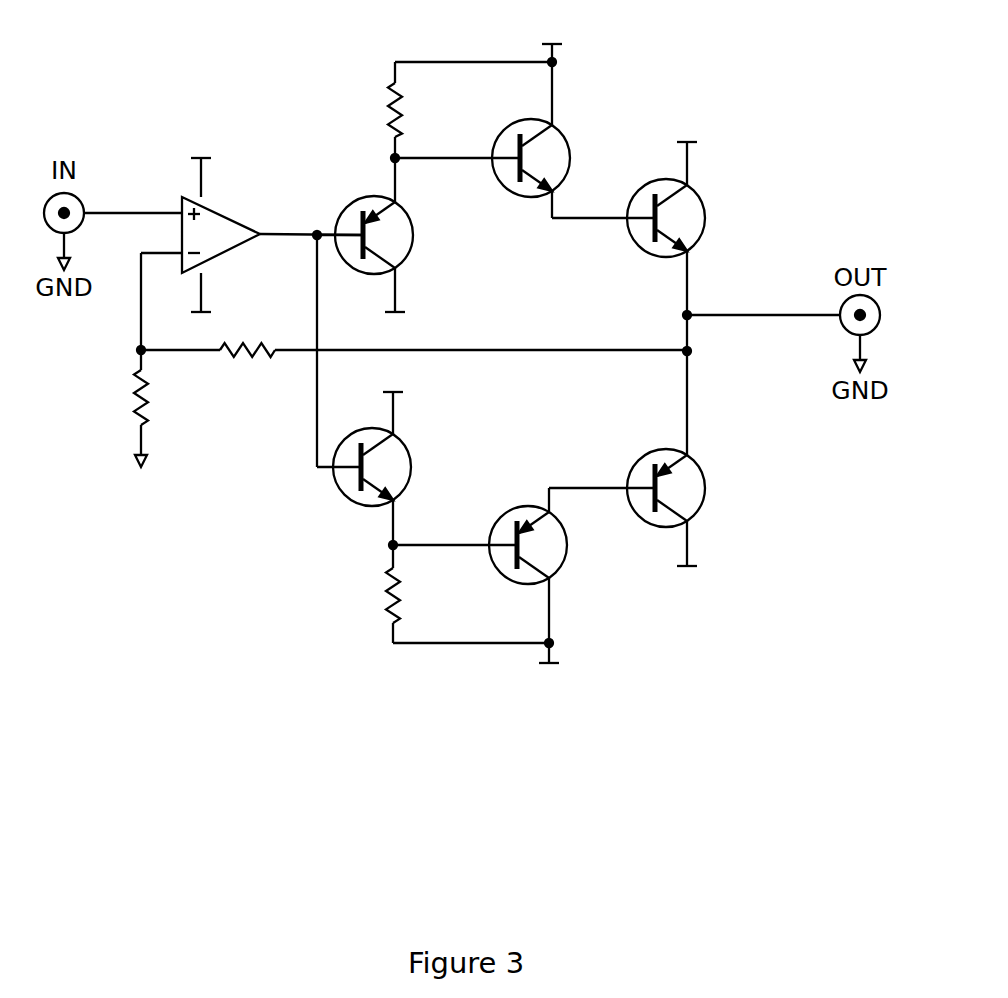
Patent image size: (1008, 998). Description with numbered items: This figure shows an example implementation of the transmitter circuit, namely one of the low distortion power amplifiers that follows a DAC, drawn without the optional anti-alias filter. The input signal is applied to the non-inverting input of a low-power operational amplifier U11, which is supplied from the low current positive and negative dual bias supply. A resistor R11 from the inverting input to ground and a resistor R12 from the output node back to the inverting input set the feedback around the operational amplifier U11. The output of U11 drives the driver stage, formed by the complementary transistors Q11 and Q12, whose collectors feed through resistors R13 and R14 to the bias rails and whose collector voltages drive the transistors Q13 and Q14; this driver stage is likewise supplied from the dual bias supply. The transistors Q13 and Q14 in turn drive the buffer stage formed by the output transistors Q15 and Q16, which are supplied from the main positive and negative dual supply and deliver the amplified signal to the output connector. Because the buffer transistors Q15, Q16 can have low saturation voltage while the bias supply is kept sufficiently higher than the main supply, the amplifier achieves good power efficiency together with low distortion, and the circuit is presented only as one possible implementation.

The operational amplifier U11 is at (226, 236).
The transistor Q11 is at (358, 250).
The transistor Q12 is at (351, 456).
The transistor Q13 is at (517, 140).
The transistor Q14 is at (511, 592).
The output transistor Q15 is at (663, 214).
The output transistor Q16 is at (661, 524).
The resistor R11 is at (158, 423).
The feedback resistor R12 is at (414, 336).
The resistor R13 is at (484, 88).
The resistor R14 is at (467, 594).